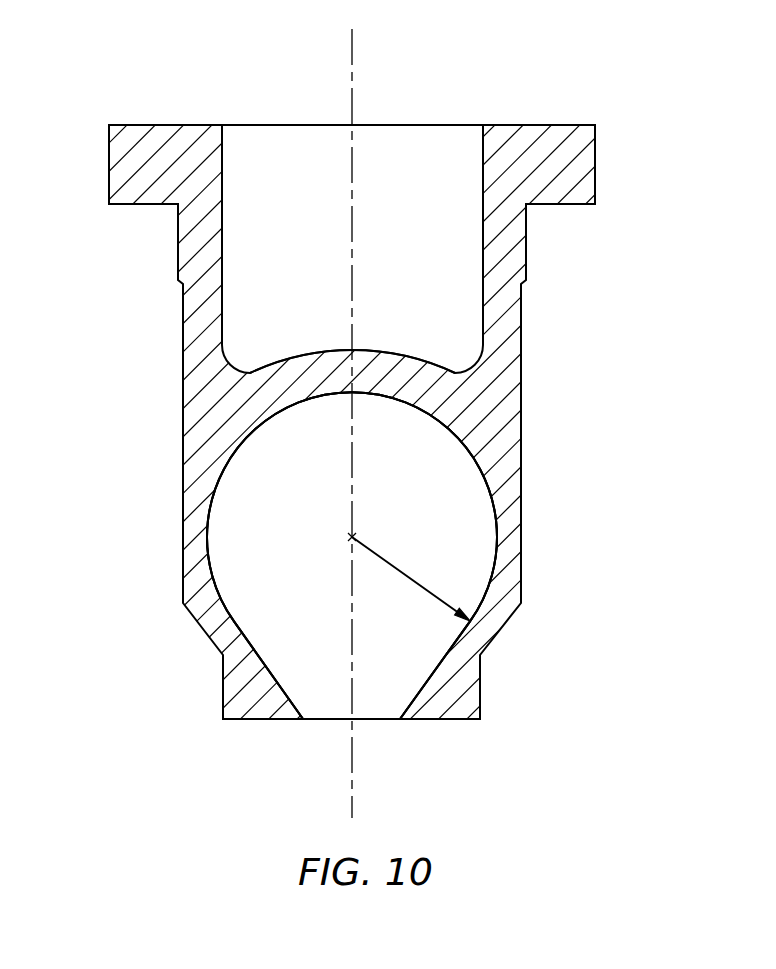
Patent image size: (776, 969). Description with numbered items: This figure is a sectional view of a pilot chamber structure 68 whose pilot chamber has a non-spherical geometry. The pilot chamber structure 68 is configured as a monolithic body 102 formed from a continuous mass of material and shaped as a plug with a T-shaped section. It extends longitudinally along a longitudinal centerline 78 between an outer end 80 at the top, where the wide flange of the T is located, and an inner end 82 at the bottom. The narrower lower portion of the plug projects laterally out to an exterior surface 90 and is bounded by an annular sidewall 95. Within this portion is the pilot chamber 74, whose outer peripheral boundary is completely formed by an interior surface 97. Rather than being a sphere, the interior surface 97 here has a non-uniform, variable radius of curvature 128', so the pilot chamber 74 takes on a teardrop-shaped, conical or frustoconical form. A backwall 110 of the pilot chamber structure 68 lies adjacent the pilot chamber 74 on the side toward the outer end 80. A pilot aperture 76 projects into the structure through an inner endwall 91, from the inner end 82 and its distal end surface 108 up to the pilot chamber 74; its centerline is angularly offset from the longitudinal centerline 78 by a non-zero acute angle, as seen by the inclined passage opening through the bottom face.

The pilot chamber structure 68 is at (388, 450).
The monolithic body 102 is at (610, 92).
The longitudinal centerline 78 is at (352, 58).
The outer end 80 is at (523, 125).
The backwall 110 is at (375, 372).
The annular sidewall 95 is at (193, 460).
The exterior surface 90 is at (183, 522).
The interior surface 97 is at (208, 520).
The pilot chamber 74 is at (405, 639).
The radius of curvature 128' is at (411, 573).
The pilot aperture 76 is at (367, 703).
The inner end 82 is at (500, 715).
The distal end surface 108 is at (470, 719).
The inner endwall 91 is at (260, 695).